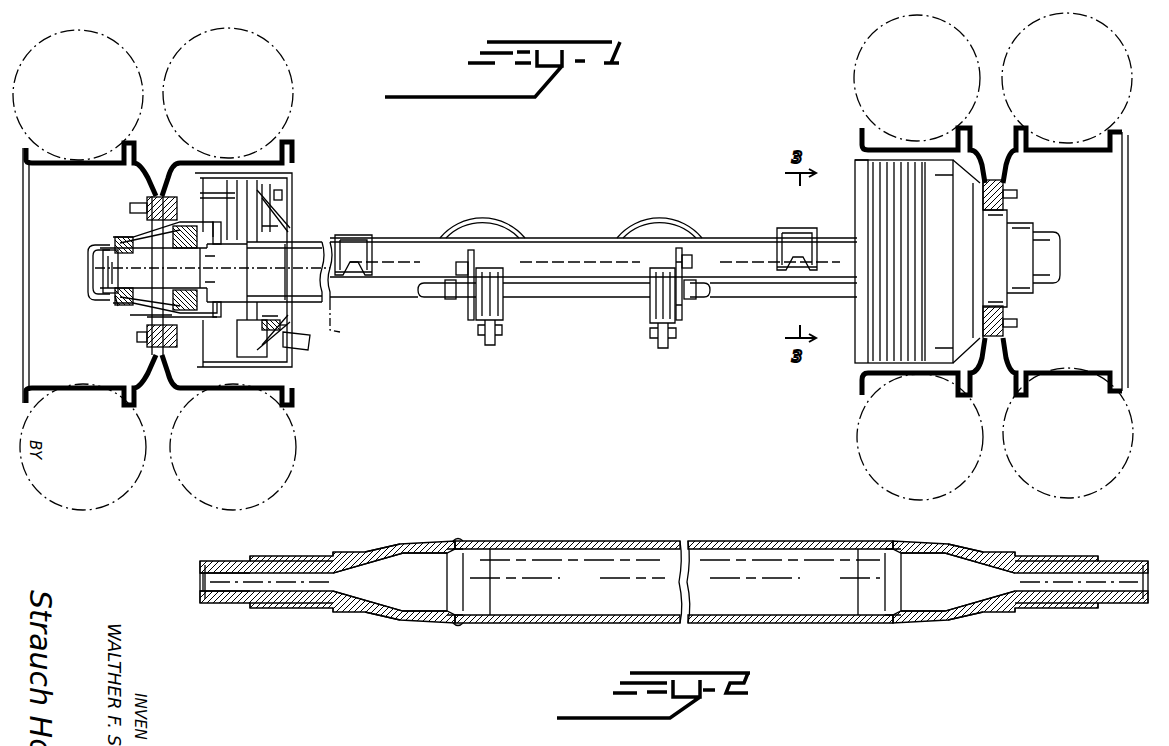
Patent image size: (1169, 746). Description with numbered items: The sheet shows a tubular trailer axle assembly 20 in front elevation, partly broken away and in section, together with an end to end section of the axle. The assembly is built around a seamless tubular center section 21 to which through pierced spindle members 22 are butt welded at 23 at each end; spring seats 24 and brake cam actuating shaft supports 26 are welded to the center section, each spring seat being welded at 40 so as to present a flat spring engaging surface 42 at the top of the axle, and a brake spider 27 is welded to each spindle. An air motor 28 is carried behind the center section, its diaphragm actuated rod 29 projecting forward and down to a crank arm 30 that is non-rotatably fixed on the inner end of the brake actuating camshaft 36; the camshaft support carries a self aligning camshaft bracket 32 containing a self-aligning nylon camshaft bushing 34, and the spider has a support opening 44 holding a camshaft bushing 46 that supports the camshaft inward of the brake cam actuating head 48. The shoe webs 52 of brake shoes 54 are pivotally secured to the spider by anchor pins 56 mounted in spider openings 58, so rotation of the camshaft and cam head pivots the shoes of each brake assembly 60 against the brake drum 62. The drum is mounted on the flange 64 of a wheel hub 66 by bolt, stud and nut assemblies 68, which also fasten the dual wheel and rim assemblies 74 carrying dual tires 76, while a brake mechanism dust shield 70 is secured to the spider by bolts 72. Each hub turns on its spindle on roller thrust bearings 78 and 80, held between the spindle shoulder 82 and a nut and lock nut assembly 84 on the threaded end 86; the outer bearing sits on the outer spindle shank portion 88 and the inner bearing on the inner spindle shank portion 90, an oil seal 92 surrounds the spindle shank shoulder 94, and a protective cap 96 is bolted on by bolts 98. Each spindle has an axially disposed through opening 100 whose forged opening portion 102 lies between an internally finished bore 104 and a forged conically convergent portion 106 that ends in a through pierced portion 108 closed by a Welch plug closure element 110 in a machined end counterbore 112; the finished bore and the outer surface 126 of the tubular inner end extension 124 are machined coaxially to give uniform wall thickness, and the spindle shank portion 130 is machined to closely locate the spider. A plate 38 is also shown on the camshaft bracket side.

In FIG. 1, the tubular trailer axle assembly 20 is at (616, 171).
In FIG. 1, the seamless tubular center section 21 is at (590, 248).
In FIG. 5, the seamless tubular center section 21 is at (598, 541).
In FIG. 1, the spindle member 22 is at (275, 242).
In FIG. 5, the spindle member 22 is at (357, 526).
In FIG. 1, the butt weld 23 is at (285, 262).
In FIG. 5, the butt weld 23 is at (488, 562).
In FIG. 1, the spring seat 24 is at (372, 243).
In FIG. 1, the brake cam actuating shaft support 26 is at (471, 250).
In FIG. 1, the brake spider 27 is at (276, 215).
In FIG. 1, the air motor 28 is at (496, 222).
In FIG. 1, the diaphragm actuated rod 29 is at (503, 334).
In FIG. 1, the crank arm 30 is at (505, 315).
In FIG. 1, the self aligning camshaft bracket 32 is at (465, 298).
In FIG. 1, the self-aligning nylon camshaft bushing 34 is at (450, 298).
In FIG. 1, the brake actuating camshaft 36 is at (428, 296).
In FIG. 1, the bracket plate 38 is at (661, 265).
In FIG. 1, the weld 40 is at (372, 260).
In FIG. 1, the flat spring engaging surface 42 is at (362, 232).
In FIG. 1, the support opening 44 is at (288, 325).
In FIG. 1, the camshaft bushing 46 is at (300, 345).
In FIG. 1, the brake cam actuating head 48 is at (242, 335).
In FIG. 1, the shoe web 52 is at (243, 212).
In FIG. 1, the brake shoe 54 is at (262, 190).
In FIG. 1, the anchor pin 56 is at (262, 175).
In FIG. 1, the spider opening 58 is at (248, 172).
In FIG. 1, the brake assembly 60 is at (262, 205).
In FIG. 1, the brake drum 62 is at (868, 340).
In FIG. 1, the flange 64 is at (140, 336).
In FIG. 1, the wheel hub 66 is at (142, 312).
In FIG. 1, the bolt, stud and nut assembly 68 is at (123, 196).
In FIG. 1, the brake mechanism dust shield 70 is at (282, 190).
In FIG. 1, the bolt 72 is at (290, 205).
In FIG. 1, the dual wheel and rim assembly 74 is at (143, 178).
In FIG. 1, the dual tire 76 is at (172, 60).
In FIG. 1, the outer roller thrust bearing 78 is at (122, 248).
In FIG. 1, the inner roller thrust bearing 80 is at (181, 249).
In FIG. 1, the spindle shoulder 82 is at (206, 283).
In FIG. 5, the spindle shoulder 82 is at (333, 614).
In FIG. 1, the nut and lock nut assembly 84 is at (100, 250).
In FIG. 1, the threaded end 86 is at (100, 276).
In FIG. 1, the outer spindle shank portion 88 is at (108, 291).
In FIG. 5, the outer spindle shank portion 88 is at (238, 607).
In FIG. 1, the inner spindle shank portion 90 is at (176, 269).
In FIG. 5, the inner spindle shank portion 90 is at (308, 612).
In FIG. 1, the oil seal 92 is at (219, 303).
In FIG. 1, the spindle shank shoulder 94 is at (240, 262).
In FIG. 5, the spindle shank shoulder 94 is at (355, 614).
In FIG. 1, the protective cap 96 is at (110, 300).
In FIG. 1, the bolt 98 is at (115, 305).
In FIG. 5, the through opening 100 is at (318, 575).
In FIG. 5, the opening portion 102 is at (428, 556).
In FIG. 5, the internally finished bore 104 is at (470, 548).
In FIG. 5, the forged conically convergent portion 106 is at (392, 560).
In FIG. 5, the through pierced portion 108 is at (265, 572).
In FIG. 5, the Welch plug closure element 110 is at (196, 561).
In FIG. 5, the machined end counterbore 112 is at (200, 595).
In FIG. 5, the tubular inner end extension 124 is at (465, 542).
In FIG. 5, the outer surface 126 is at (450, 616).
In FIG. 5, the spindle shank portion 130 is at (414, 614).